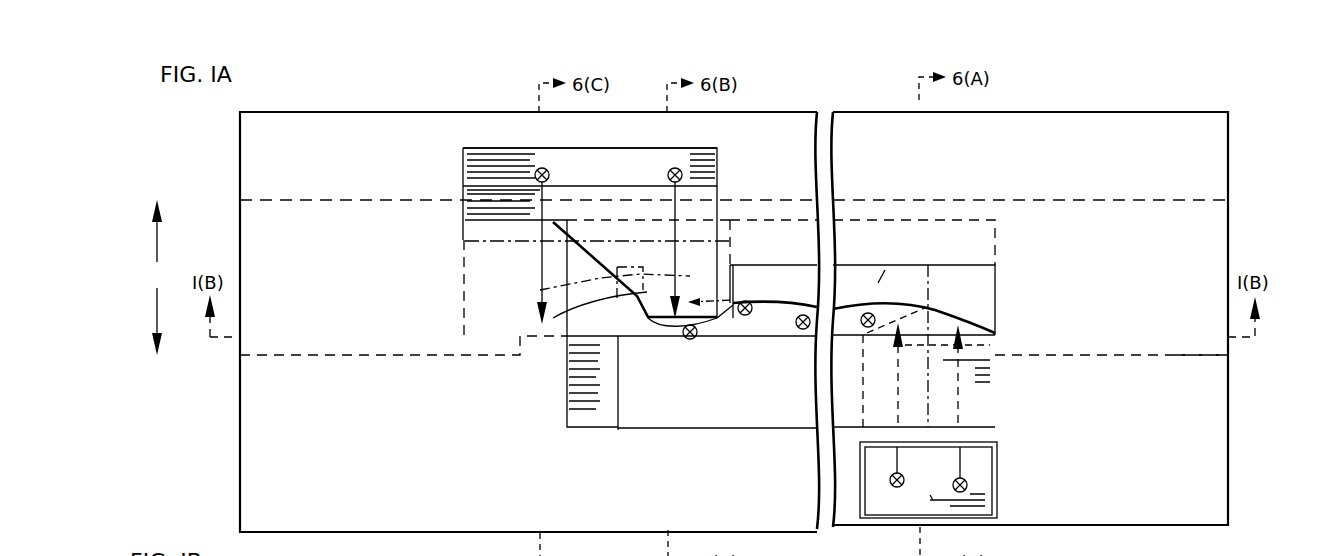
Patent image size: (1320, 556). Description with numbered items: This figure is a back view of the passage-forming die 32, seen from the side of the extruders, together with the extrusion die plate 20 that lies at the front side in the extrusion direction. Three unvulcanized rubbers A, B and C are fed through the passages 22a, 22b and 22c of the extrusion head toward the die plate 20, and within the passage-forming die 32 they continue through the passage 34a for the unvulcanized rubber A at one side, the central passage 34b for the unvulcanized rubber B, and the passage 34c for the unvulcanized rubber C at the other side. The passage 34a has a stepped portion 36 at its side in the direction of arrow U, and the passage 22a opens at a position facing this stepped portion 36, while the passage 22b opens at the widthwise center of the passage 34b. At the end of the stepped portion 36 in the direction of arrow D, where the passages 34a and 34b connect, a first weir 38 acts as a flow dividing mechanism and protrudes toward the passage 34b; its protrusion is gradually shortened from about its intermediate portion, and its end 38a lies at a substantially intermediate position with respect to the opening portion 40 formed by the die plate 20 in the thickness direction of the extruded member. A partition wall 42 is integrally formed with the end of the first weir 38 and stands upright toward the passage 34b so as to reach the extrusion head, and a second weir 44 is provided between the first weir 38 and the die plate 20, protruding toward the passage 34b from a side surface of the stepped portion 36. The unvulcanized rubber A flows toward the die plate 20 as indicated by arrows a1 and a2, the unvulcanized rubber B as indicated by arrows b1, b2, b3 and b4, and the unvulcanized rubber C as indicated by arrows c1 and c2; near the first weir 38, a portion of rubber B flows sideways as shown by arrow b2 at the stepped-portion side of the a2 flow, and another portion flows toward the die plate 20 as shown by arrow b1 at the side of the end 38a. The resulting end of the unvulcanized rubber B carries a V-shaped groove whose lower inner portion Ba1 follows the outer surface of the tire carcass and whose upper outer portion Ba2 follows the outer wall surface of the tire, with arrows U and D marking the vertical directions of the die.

The extrusion die plate 20 is at (1178, 357).
The passage for unvulcanized rubber A 22a is at (562, 162).
The passage for unvulcanized rubber B 22b is at (930, 292).
The passage for unvulcanized rubber C 22c is at (985, 483).
The passage-forming die 32 is at (1230, 128).
The passage for unvulcanized rubber A 34a is at (661, 56).
The passage for unvulcanized rubber B 34b is at (878, 283).
The passage for unvulcanized rubber C 34c is at (930, 495).
The stepped portion 36 is at (481, 213).
The first weir 38 is at (567, 255).
The end of first weir 38a is at (590, 346).
The opening portion 40 is at (748, 406).
The partition wall 42 is at (733, 291).
The second weir 44 is at (651, 255).
The flow arrow of unvulcanized rubber A a1 is at (544, 210).
The flow arrow of unvulcanized rubber A a2 is at (677, 215).
The flow arrow of unvulcanized rubber B b1 is at (699, 340).
The flow arrow of unvulcanized rubber B b2 is at (746, 318).
The flow arrow of unvulcanized rubber B b3 is at (801, 332).
The flow arrow of unvulcanized rubber B b4 is at (868, 332).
The flow arrow of unvulcanized rubber C c1 is at (897, 465).
The flow arrow of unvulcanized rubber C c2 is at (960, 456).
The unvulcanized rubber A is at (590, 330).
The unvulcanized rubber B is at (773, 348).
The unvulcanized rubber C is at (1003, 325).
The inner portion of groove portion Ba1 is at (645, 340).
The outer portion of groove portion Ba2 is at (540, 290).
The arrow U direction U is at (160, 238).
The arrow D direction D is at (160, 312).